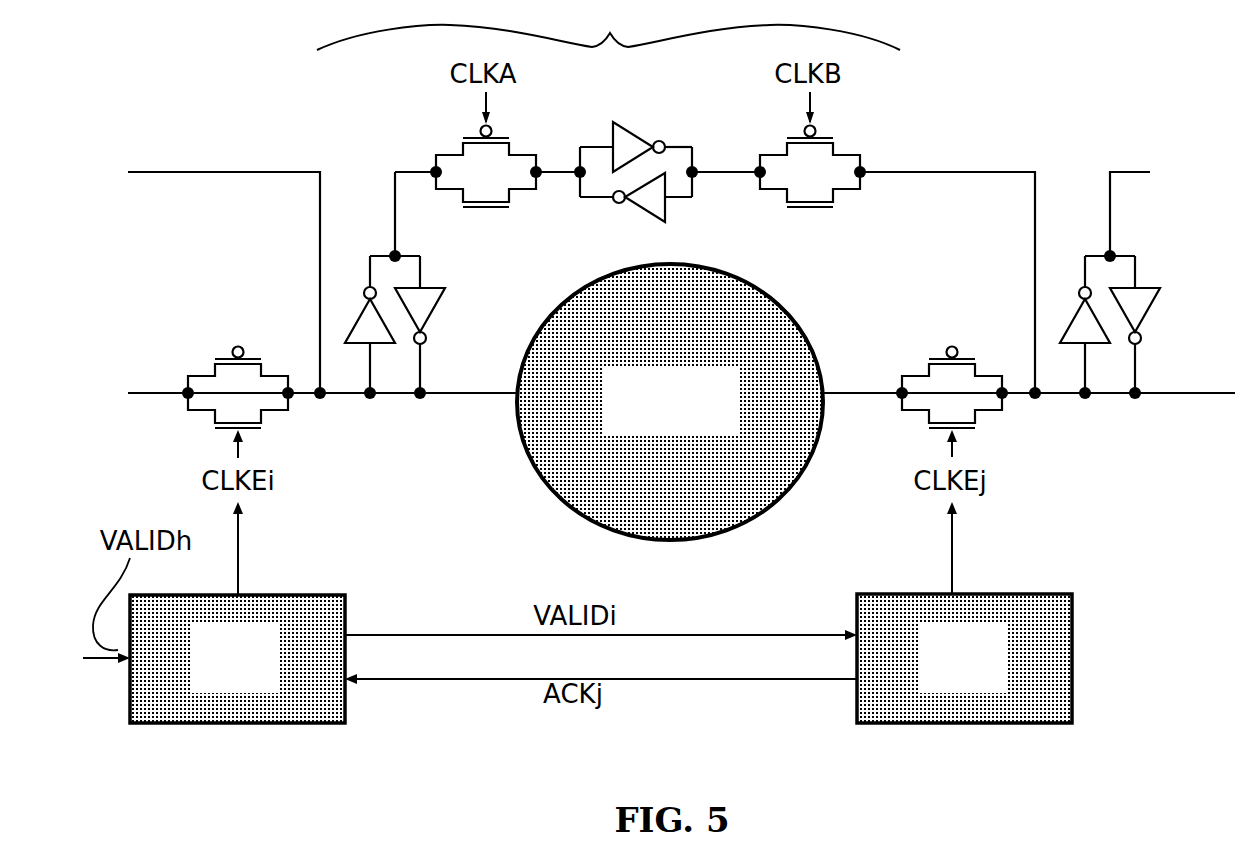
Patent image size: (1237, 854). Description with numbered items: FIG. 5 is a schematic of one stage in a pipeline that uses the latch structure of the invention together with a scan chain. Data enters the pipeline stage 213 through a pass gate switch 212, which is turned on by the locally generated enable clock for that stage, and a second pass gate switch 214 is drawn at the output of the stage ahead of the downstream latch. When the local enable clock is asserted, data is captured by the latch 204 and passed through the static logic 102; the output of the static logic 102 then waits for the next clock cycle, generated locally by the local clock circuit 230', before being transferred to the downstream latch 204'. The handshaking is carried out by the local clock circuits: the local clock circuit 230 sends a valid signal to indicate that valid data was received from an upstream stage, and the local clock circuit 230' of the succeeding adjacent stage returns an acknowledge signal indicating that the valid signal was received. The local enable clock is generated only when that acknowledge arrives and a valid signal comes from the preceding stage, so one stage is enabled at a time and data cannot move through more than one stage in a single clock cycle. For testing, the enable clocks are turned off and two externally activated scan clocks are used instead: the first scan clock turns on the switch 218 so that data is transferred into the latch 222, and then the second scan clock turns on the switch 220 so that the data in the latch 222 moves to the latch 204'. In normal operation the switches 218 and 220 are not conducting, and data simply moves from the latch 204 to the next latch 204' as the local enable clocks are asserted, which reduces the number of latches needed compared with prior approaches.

The static logic 102 is at (783, 483).
The latch 204 is at (393, 262).
The latch 204' is at (1148, 304).
The pass gate switch 212 is at (218, 340).
The pipeline stage 213 is at (608, 27).
The pass gate transistor (CLKEj) 214 is at (972, 340).
The switch 218 is at (487, 214).
The switch 220 is at (809, 213).
The latch 222 is at (645, 122).
The local clock circuit 230 is at (248, 621).
The local clock circuit 230' is at (975, 621).